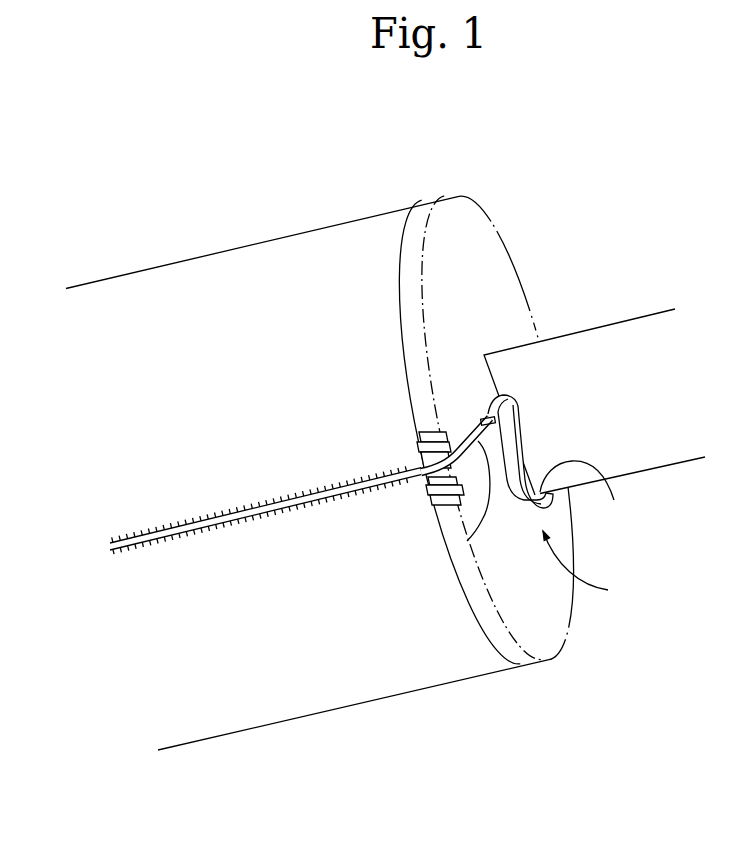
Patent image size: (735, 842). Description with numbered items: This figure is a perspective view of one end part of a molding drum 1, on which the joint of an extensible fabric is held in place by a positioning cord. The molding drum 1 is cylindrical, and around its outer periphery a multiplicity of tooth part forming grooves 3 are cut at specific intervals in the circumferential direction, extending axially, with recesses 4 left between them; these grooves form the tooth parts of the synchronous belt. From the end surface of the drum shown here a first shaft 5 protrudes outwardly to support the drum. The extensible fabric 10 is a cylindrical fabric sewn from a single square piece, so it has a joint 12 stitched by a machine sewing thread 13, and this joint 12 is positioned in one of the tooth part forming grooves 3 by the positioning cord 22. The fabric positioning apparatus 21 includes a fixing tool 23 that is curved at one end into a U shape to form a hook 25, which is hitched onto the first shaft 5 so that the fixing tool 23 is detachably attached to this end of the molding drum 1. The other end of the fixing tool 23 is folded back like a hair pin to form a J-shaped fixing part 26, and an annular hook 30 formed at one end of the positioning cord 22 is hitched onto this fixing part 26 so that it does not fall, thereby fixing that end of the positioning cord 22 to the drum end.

The molding drum 1 is at (490, 208).
The extensible fabric 10 is at (352, 221).
The annular hook 30 is at (486, 413).
The J-shaped fixing part 26 is at (520, 396).
The fixing tool 23 is at (527, 442).
The first shaft 5 is at (648, 313).
The tooth part forming groove 3 is at (444, 400).
The joint 12 is at (328, 486).
The machine sewing thread 13 is at (352, 498).
The recess 4 is at (430, 474).
The positioning cord 22 is at (471, 530).
The hook 25 is at (614, 500).
The fabric positioning apparatus 21 is at (608, 590).